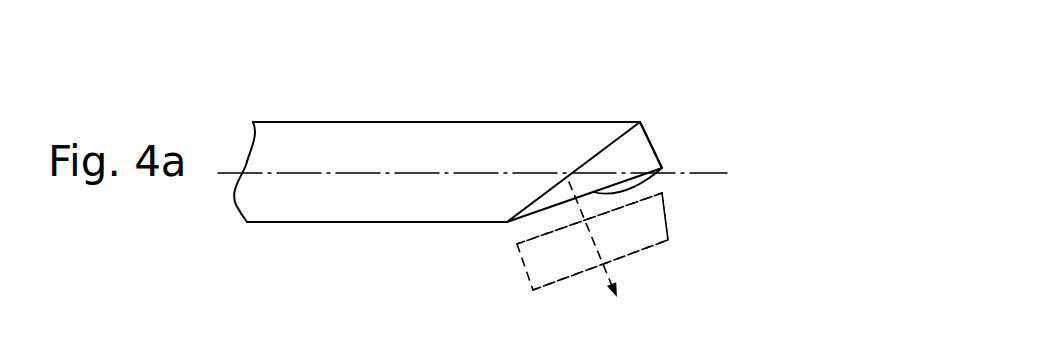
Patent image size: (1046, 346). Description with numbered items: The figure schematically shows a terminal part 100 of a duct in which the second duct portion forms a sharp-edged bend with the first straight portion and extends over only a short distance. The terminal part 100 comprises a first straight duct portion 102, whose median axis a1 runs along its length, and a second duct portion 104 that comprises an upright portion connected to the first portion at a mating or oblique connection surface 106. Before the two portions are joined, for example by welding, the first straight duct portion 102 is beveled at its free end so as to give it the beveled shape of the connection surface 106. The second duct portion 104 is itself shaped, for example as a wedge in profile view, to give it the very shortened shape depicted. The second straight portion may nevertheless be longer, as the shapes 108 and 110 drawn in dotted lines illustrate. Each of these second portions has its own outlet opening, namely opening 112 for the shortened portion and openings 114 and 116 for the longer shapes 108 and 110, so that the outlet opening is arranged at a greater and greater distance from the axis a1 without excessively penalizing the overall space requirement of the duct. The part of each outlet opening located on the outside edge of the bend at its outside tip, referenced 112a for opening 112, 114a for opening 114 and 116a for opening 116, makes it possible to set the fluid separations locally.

The terminal part 100 is at (249, 111).
The first straight duct portion 102 is at (318, 122).
The median axis a1 is at (417, 173).
The second duct portion 104 is at (648, 141).
The mating or oblique connection surface 106 is at (613, 144).
The longer second portion shape 108 is at (508, 223).
The longer second portion shape 110 is at (531, 276).
The outlet opening 112 is at (652, 170).
The outside tip of outlet opening 112a is at (664, 169).
The outlet opening 114 is at (624, 203).
The outside tip of outlet opening 114a is at (667, 188).
The outlet opening 116 is at (660, 244).
The outside tip of outlet opening 116a is at (681, 220).